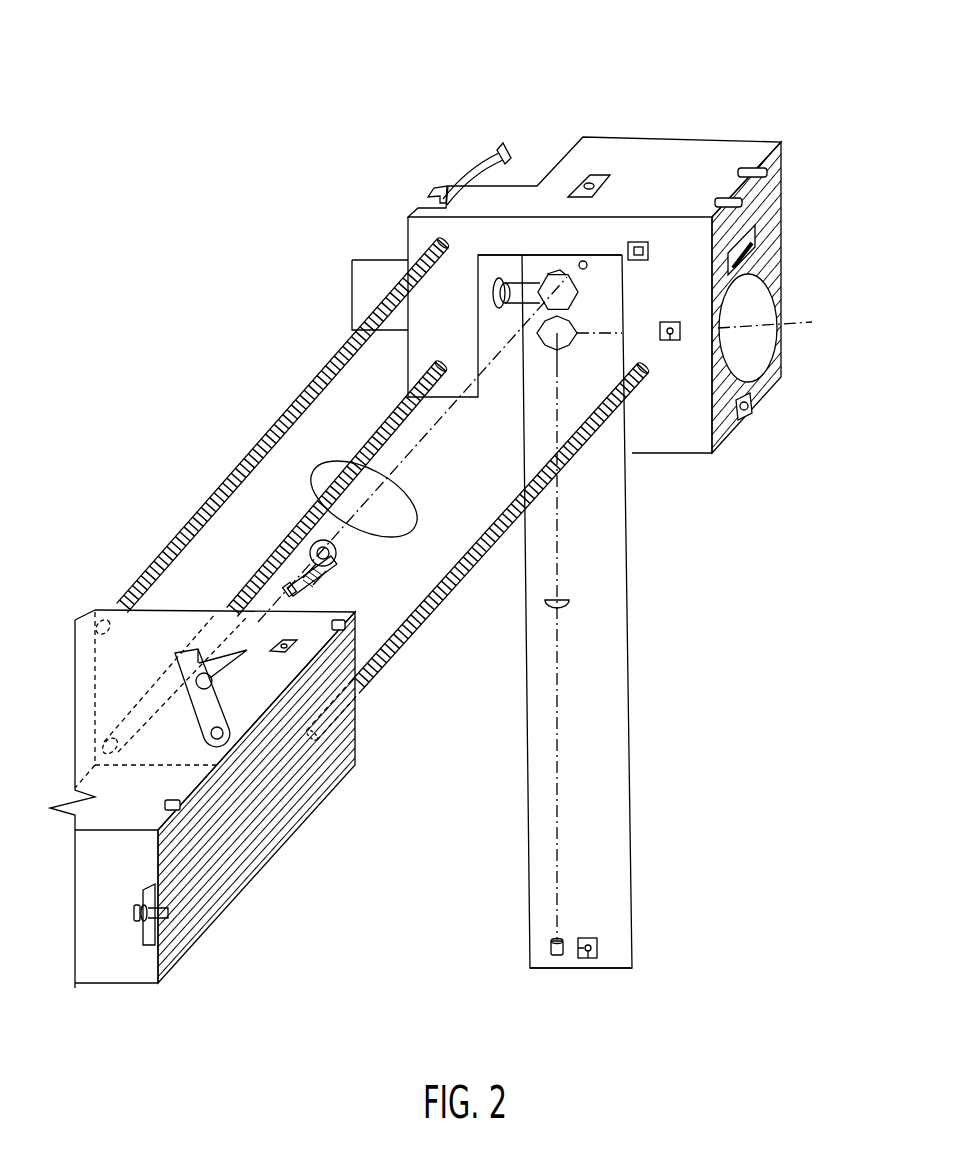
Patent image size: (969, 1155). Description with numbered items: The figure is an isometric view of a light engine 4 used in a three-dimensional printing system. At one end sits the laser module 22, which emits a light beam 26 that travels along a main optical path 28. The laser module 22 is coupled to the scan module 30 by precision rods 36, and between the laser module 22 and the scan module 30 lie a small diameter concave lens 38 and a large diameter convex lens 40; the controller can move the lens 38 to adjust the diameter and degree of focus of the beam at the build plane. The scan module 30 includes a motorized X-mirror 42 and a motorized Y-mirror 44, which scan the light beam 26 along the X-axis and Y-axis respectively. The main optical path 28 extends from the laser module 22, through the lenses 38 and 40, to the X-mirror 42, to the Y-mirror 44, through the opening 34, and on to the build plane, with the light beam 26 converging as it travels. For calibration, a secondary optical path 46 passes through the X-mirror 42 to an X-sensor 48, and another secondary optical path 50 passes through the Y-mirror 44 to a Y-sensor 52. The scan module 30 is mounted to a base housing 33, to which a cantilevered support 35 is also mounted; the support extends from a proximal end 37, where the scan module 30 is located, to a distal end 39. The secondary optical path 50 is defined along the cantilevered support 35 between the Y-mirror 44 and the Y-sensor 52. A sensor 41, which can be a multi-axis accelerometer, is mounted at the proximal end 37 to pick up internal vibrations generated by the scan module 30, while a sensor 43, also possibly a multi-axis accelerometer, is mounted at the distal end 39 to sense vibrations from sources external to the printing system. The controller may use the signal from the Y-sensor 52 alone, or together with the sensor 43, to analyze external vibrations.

The light engine 4 is at (572, 84).
The laser module 22 is at (279, 875).
The light beam 26 is at (203, 677).
The main optical path 28 is at (808, 322).
The scan module 30 is at (545, 210).
The base housing 33 is at (727, 433).
The opening 34 is at (755, 372).
The cantilevered support 35 is at (605, 712).
The precision rods 36 is at (312, 380).
The proximal end 37 is at (602, 288).
The small diameter concave lens 38 is at (288, 586).
The distal end 39 is at (607, 963).
The large diameter convex lens 40 is at (355, 502).
The sensor 41 is at (671, 322).
The motorized X-mirror 42 is at (560, 272).
The sensor 43 is at (598, 948).
The motorized Y-mirror 44 is at (557, 330).
The secondary optical path 46 is at (572, 268).
The X-sensor 48 is at (585, 261).
The secondary optical path 50 is at (557, 538).
The Y-sensor 52 is at (550, 946).